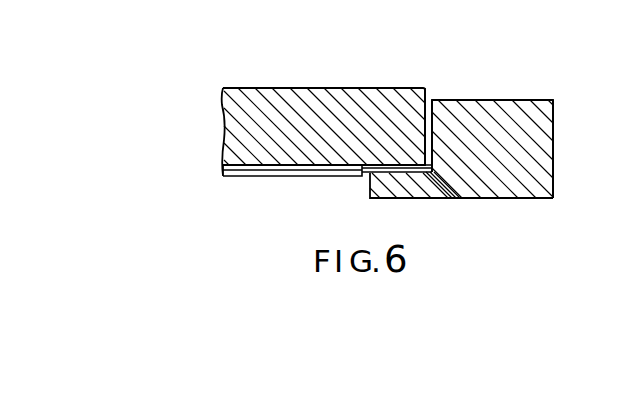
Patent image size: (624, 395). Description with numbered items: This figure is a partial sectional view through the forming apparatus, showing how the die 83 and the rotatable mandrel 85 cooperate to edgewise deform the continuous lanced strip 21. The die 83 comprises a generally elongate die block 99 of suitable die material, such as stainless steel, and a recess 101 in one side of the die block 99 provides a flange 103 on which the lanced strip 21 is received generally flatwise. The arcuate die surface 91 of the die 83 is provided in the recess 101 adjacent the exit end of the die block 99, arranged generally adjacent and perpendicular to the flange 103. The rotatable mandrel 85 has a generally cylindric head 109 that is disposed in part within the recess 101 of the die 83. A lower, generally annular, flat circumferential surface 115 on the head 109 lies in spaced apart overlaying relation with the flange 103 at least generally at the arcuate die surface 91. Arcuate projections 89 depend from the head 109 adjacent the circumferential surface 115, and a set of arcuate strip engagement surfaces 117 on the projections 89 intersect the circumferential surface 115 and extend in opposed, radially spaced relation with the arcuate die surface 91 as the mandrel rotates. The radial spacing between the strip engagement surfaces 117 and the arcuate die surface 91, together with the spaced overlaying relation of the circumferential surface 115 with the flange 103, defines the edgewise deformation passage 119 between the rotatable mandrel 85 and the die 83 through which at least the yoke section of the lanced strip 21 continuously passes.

The lanced strip 21 is at (434, 164).
The die 83 is at (555, 135).
The rotatable mandrel 85 is at (232, 80).
The arcuate projections 89 is at (363, 176).
The arcuate die surface 91 is at (430, 178).
The die block 99 is at (555, 104).
The recess 101 is at (429, 107).
The flange 103 is at (386, 190).
The head 109 is at (307, 91).
The circumferential surface 115 is at (403, 166).
The strip engagement surfaces 117 is at (374, 168).
The edgewise deformation passage 119 is at (440, 198).